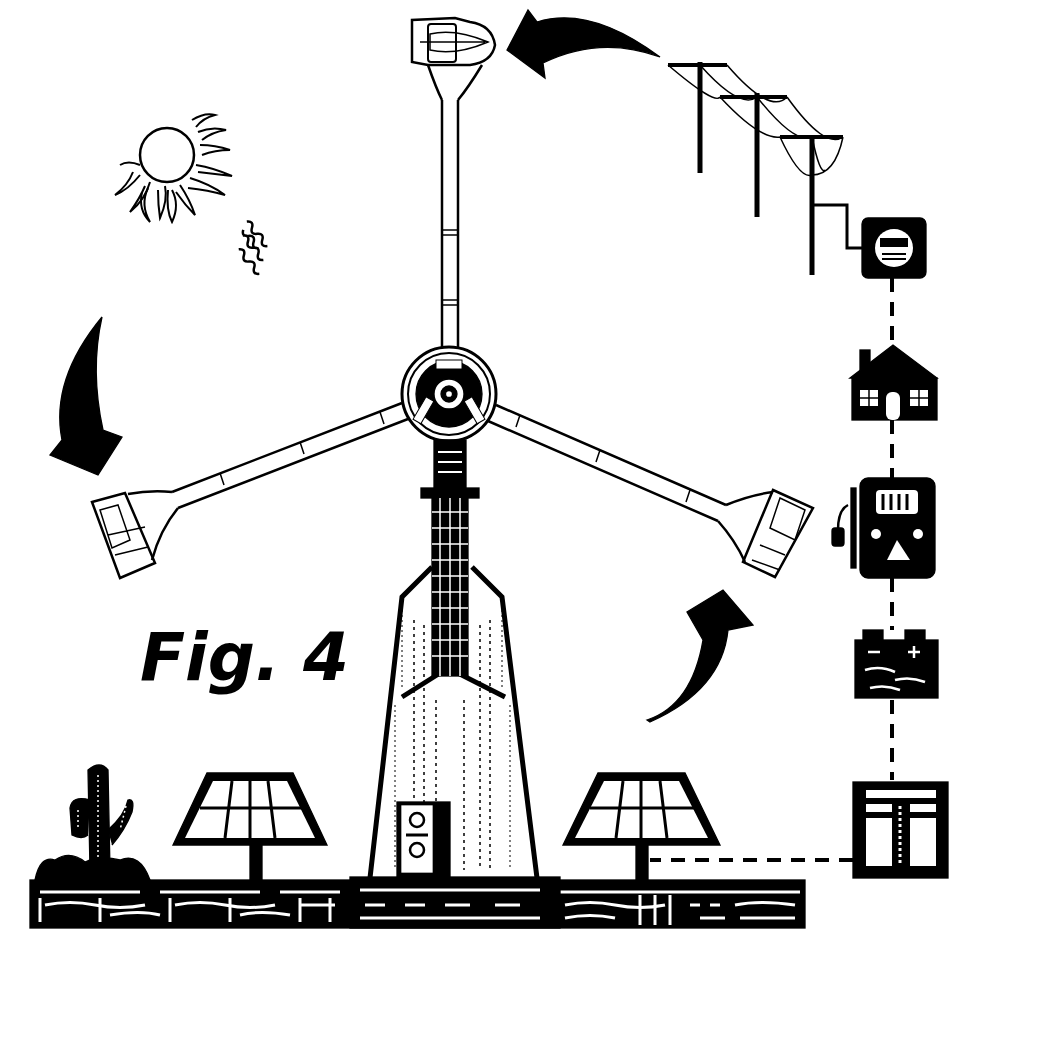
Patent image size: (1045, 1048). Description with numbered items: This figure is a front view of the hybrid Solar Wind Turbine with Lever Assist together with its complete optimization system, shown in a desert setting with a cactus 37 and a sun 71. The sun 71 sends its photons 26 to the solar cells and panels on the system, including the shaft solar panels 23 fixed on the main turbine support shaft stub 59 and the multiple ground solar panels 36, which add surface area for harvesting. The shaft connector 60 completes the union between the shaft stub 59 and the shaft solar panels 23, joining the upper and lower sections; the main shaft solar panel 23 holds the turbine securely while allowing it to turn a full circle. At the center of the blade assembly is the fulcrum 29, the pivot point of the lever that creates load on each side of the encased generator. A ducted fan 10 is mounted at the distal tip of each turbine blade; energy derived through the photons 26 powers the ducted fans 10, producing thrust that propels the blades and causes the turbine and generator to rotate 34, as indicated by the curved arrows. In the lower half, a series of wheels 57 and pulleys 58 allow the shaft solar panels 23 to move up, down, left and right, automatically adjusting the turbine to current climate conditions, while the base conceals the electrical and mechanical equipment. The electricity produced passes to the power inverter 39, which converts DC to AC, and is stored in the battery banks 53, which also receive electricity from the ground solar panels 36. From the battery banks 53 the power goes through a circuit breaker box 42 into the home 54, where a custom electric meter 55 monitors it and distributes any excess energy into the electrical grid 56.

The ducted fan 10 is at (790, 550).
The shaft solar panels 23 is at (484, 566).
The photons 26 is at (270, 242).
The fulcrum 29 is at (410, 460).
The rotate 34 is at (575, 55).
The ground solar panels 36 is at (305, 790).
The cactus 37 is at (85, 770).
The power inverter 39 is at (845, 806).
The circuit breaker box 42 is at (850, 480).
The battery banks 53 is at (850, 668).
The home 54 is at (850, 378).
The electric meter 55 is at (878, 215).
The electrical grid 56 is at (748, 168).
The wheels 57 is at (490, 652).
The pulleys 58 is at (490, 716).
The shaft stub 59 is at (470, 470).
The shaft connector 60 is at (495, 500).
The sun 71 is at (245, 155).